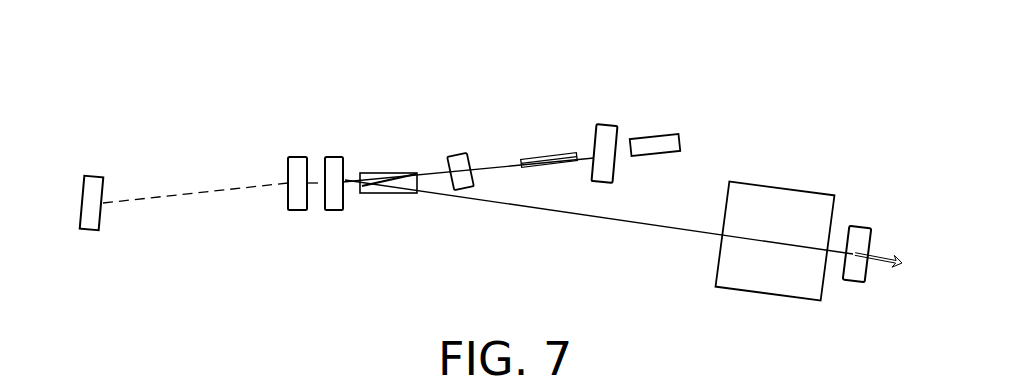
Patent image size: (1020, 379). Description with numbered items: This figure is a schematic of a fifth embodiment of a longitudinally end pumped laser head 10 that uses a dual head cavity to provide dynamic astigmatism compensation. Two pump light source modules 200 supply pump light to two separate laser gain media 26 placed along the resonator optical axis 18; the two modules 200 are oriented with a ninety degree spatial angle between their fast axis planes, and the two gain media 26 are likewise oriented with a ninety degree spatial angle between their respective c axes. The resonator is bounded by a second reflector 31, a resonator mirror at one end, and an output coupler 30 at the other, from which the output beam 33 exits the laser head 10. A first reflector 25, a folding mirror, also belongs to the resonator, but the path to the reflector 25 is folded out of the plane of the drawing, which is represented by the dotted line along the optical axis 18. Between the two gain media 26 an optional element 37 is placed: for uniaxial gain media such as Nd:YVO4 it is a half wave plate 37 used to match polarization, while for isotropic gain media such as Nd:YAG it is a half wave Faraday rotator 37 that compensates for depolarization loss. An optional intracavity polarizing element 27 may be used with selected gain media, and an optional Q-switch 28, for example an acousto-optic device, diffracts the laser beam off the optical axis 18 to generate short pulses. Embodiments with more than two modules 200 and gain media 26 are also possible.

The laser head 10 is at (333, 42).
The resonator optical axis 18 is at (145, 198).
The first reflector 25 is at (333, 157).
The gain medium 26 is at (390, 197).
The intracavity polarizing element 27 is at (632, 208).
The Q-switch 28 is at (748, 297).
The output coupler 30 is at (863, 225).
The second reflector 31 is at (92, 177).
The output beam 33 is at (877, 277).
The half wave plate 37 is at (462, 153).
The pump light source module 200 is at (279, 88).